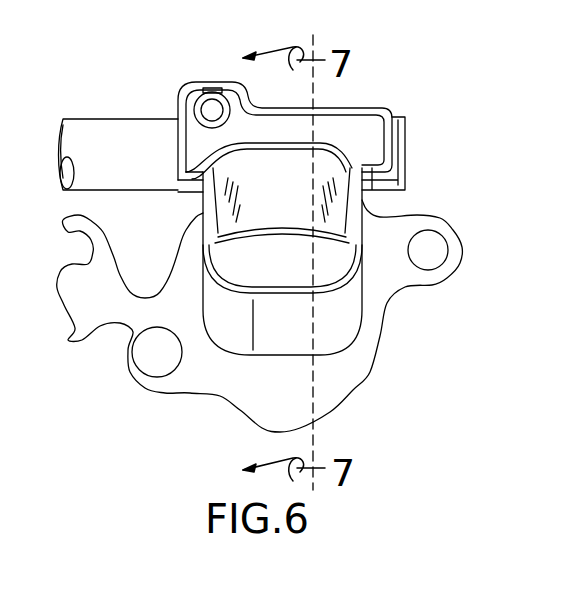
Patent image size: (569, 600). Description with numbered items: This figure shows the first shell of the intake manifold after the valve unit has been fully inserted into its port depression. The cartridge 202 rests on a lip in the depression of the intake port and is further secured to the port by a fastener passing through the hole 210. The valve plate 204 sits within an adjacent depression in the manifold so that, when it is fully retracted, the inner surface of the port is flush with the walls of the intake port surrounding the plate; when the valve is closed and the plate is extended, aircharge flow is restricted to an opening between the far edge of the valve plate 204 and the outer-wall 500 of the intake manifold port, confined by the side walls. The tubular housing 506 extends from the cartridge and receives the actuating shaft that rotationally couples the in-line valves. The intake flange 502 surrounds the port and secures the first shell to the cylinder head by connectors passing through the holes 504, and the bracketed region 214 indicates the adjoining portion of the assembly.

The cartridge 202 is at (300, 141).
The valve plate 204 is at (300, 201).
The hole 210 is at (215, 87).
The mounting assembly 214 is at (453, 167).
The outer-wall of the intake manifold port 500 is at (300, 337).
The intake flange 502 is at (300, 404).
The holes 504 is at (85, 262).
The tubular housing 506 is at (147, 166).